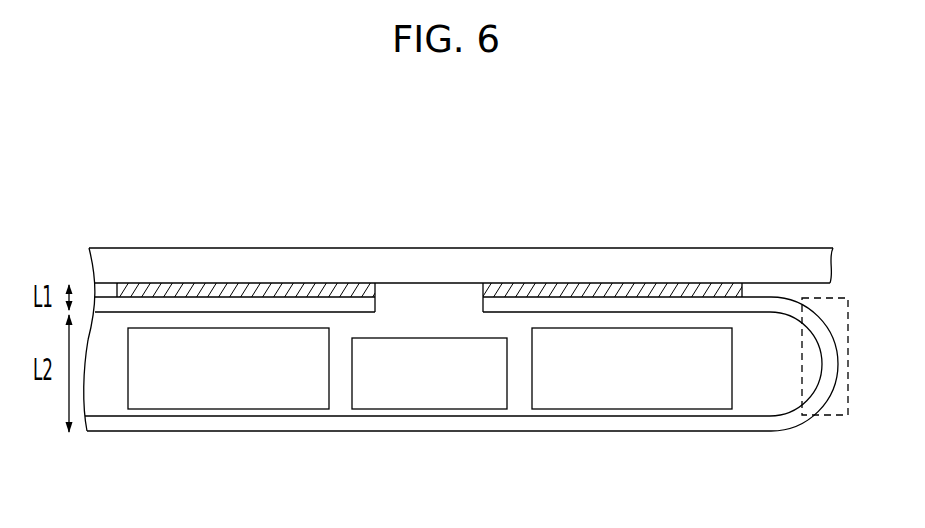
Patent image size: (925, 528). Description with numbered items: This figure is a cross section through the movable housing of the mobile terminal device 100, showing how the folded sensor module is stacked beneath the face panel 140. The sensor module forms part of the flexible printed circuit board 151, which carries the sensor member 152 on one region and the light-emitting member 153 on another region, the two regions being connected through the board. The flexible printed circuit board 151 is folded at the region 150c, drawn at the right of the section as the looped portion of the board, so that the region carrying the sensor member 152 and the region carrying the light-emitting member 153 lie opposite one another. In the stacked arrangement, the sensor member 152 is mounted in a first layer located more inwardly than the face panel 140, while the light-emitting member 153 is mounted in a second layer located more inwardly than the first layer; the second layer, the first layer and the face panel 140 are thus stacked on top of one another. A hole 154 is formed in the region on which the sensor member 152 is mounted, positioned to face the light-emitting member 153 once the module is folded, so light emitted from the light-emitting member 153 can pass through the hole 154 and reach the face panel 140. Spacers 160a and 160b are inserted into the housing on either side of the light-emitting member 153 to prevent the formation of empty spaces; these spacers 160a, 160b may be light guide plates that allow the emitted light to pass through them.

The mobile terminal device 100 is at (466, 330).
The face panel 140 is at (640, 258).
The flexible printed circuit board 151 is at (762, 422).
The sensor member 152 is at (297, 286).
The light-emitting member 153 is at (427, 400).
The hole 154 is at (410, 297).
The spacer 160a is at (267, 400).
The spacer 160b is at (625, 402).
The region 150c is at (832, 417).